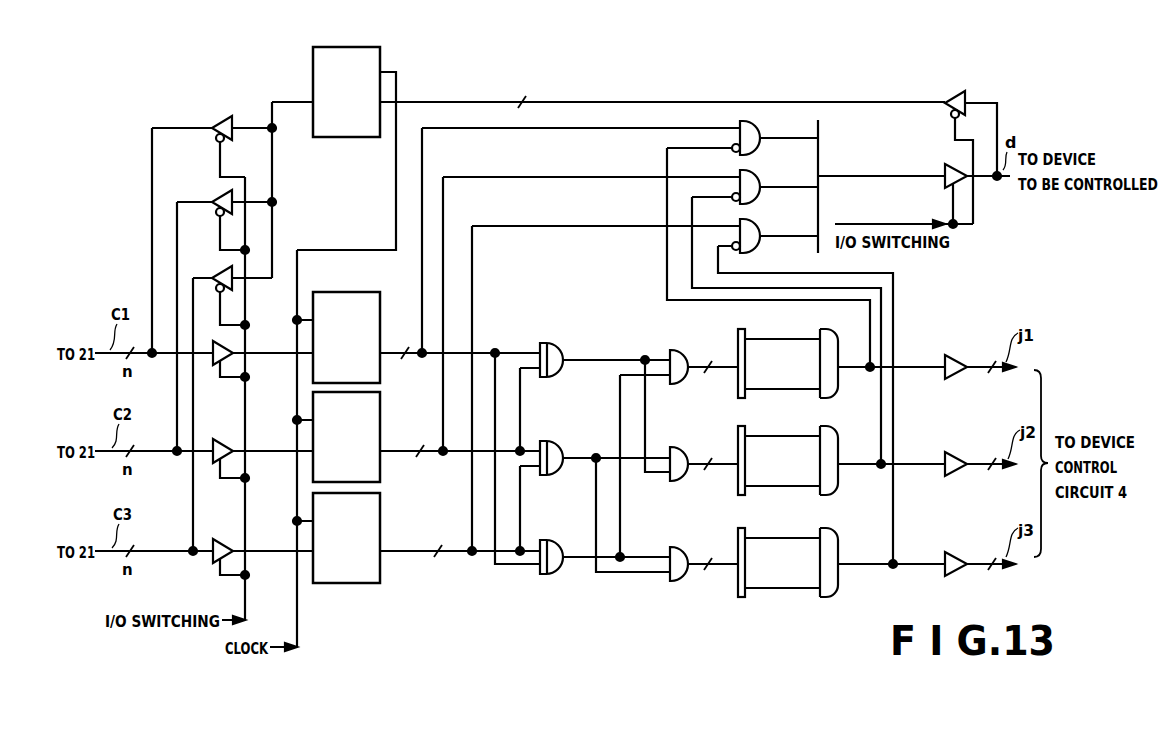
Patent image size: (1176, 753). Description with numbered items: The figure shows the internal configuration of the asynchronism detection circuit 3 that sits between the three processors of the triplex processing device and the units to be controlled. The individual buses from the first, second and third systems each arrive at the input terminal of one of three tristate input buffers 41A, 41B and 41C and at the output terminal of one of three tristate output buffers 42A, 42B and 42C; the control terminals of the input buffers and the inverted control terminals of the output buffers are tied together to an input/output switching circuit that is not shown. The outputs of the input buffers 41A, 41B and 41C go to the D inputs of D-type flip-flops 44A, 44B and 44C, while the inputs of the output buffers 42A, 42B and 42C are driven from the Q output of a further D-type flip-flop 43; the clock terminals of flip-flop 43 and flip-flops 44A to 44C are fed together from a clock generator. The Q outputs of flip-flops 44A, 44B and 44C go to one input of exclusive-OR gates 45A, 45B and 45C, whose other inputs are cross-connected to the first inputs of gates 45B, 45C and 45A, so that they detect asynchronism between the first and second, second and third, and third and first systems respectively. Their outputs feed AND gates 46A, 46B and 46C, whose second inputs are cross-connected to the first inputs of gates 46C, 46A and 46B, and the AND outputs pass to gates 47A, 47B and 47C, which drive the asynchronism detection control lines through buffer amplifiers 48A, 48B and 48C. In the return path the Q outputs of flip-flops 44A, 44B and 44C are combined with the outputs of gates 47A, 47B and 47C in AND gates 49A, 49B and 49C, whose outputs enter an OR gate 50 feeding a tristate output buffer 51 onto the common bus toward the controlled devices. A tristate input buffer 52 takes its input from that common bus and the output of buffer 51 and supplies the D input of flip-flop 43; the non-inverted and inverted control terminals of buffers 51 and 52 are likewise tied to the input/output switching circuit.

The asynchronism detection circuit 3 is at (620, 92).
The tristate input buffer 41A is at (216, 368).
The tristate input buffer 41B is at (216, 466).
The tristate input buffer 41C is at (216, 564).
The tristate output buffer 42A is at (215, 122).
The tristate output buffer 42B is at (215, 196).
The tristate output buffer 42C is at (215, 270).
The D-type flip-flop 43 is at (313, 64).
The D-type flip-flop 44A is at (383, 322).
The D-type flip-flop 44B is at (383, 425).
The D-type flip-flop 44C is at (383, 528).
The exclusive-OR gate 45A is at (549, 347).
The exclusive-OR gate 45B is at (549, 445).
The exclusive-OR gate 45C is at (549, 543).
The AND gate 46A is at (679, 352).
The AND gate 46B is at (679, 449).
The AND gate 46C is at (679, 547).
The exclusive-OR gate 47A is at (775, 391).
The exclusive-OR gate 47B is at (778, 488).
The exclusive-OR gate 47C is at (775, 590).
The buffer amplifier 48A is at (955, 357).
The buffer amplifier 48B is at (955, 454).
The buffer amplifier 48C is at (957, 552).
The AND gate 49A is at (760, 130).
The AND gate 49B is at (760, 180).
The AND gate 49C is at (760, 228).
The OR gate 50 is at (822, 152).
The tristate output buffer 51 is at (945, 183).
The tristate input buffer 52 is at (952, 123).